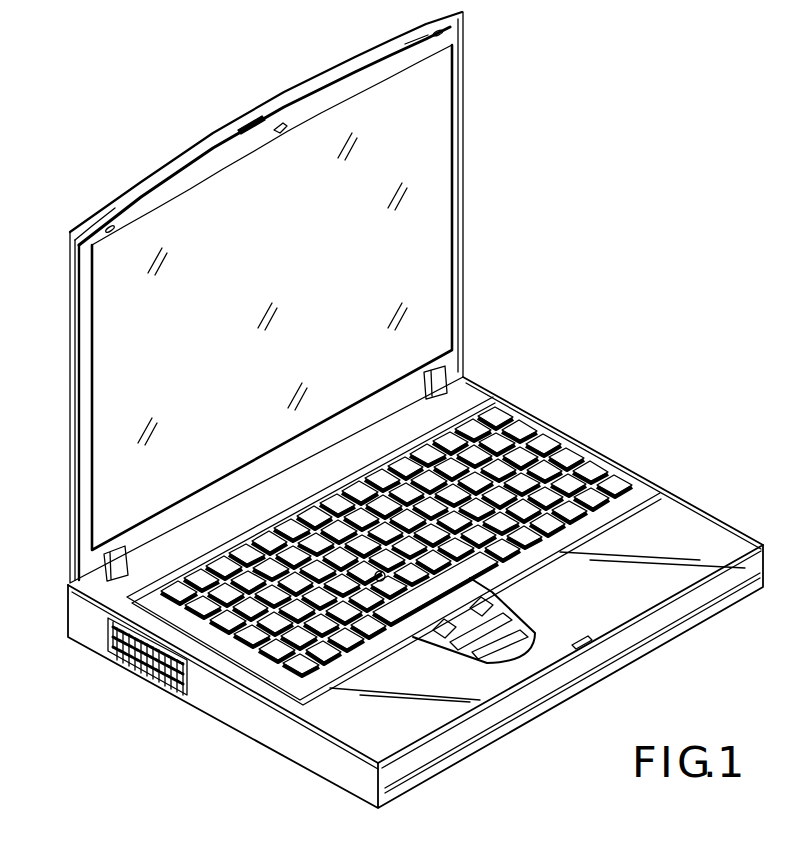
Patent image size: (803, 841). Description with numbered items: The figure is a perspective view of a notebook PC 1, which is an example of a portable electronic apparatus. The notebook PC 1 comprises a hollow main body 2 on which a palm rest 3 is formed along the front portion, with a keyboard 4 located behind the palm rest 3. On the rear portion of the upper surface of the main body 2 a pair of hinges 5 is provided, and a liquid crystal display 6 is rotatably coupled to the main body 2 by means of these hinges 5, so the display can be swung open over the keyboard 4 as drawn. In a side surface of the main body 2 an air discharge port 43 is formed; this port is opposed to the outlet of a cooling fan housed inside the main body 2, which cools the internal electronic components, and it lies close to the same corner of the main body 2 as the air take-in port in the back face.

The notebook PC 1 is at (399, 410).
The main body 2 is at (716, 512).
The palm rest 3 is at (633, 595).
The keyboard 4 is at (558, 433).
The hinge 5 is at (441, 384).
The liquid crystal display 6 is at (433, 182).
The air discharge port 43 is at (137, 670).